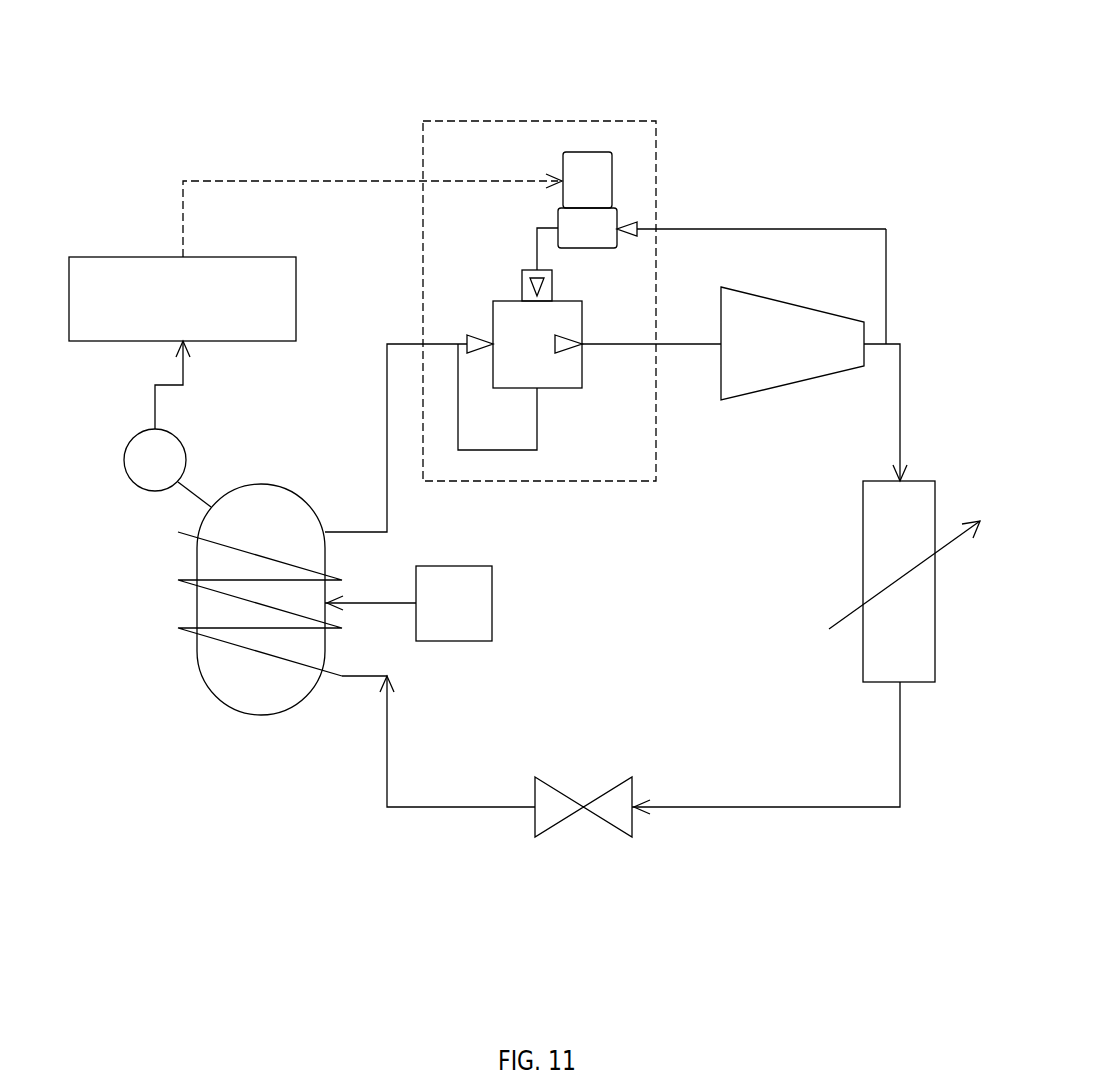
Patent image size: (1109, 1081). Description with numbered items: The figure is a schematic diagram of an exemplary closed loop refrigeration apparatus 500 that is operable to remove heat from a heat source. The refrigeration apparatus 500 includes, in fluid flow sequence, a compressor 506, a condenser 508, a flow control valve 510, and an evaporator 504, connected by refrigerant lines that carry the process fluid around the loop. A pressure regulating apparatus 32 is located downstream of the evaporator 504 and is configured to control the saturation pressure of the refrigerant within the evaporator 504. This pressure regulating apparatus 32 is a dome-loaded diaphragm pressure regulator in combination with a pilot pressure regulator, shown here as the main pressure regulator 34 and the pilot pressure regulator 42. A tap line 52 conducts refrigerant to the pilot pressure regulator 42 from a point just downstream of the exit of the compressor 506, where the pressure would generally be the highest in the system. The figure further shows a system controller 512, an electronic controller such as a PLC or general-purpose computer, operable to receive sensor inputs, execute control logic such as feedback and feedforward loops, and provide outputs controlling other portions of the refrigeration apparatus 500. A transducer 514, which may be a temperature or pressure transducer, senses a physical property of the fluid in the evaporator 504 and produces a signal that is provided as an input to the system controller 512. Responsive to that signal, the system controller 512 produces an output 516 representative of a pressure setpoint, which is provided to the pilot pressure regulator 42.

The refrigeration apparatus 500 is at (648, 76).
The pressure regulating apparatus 32 is at (657, 168).
The pilot pressure regulator 42 is at (577, 211).
The tap line 52 is at (770, 228).
The main pressure regulator 34 is at (566, 300).
The compressor 506 is at (792, 343).
The condenser 508 is at (882, 553).
The flow control valve 510 is at (552, 785).
The system controller 512 is at (182, 299).
The transducer 514 is at (167, 424).
The output 516 is at (278, 178).
The evaporator 504 is at (278, 706).